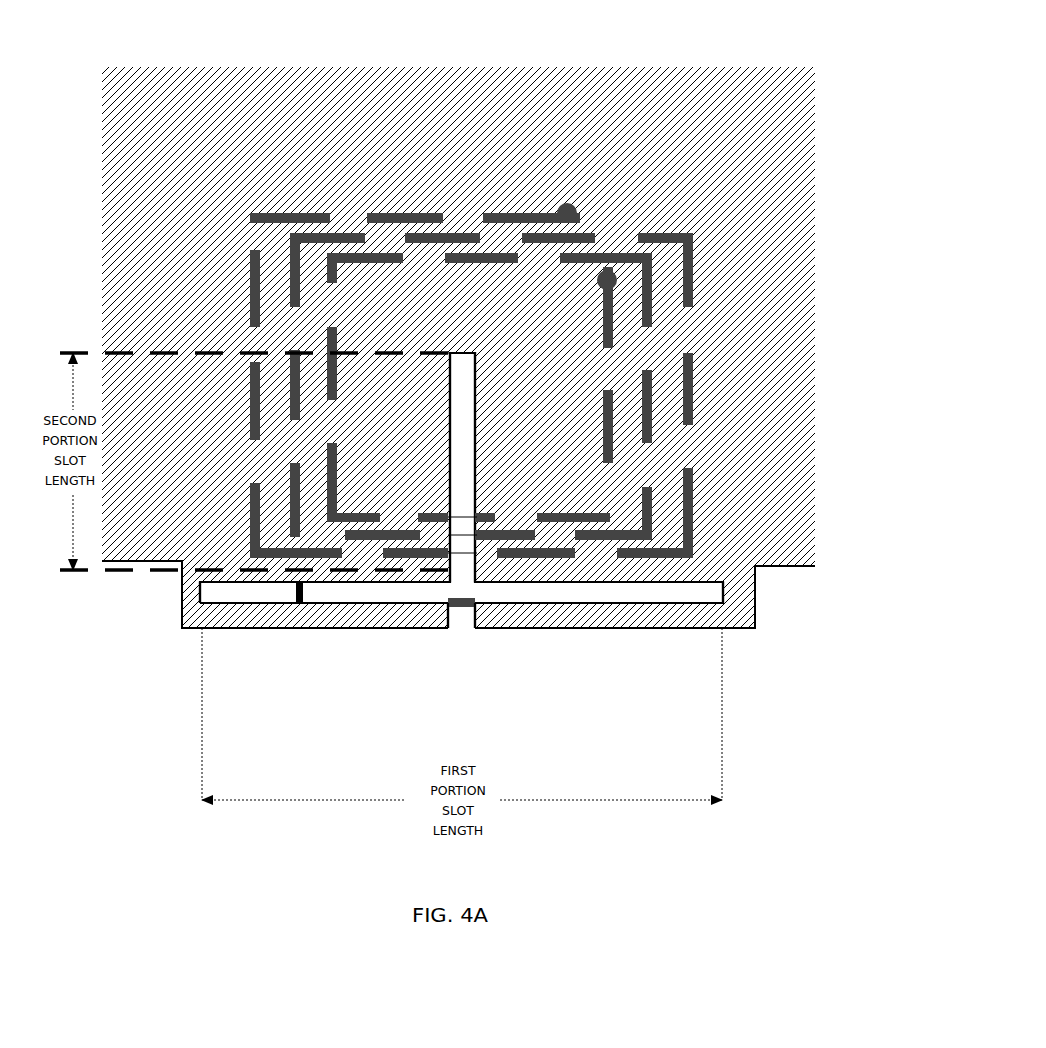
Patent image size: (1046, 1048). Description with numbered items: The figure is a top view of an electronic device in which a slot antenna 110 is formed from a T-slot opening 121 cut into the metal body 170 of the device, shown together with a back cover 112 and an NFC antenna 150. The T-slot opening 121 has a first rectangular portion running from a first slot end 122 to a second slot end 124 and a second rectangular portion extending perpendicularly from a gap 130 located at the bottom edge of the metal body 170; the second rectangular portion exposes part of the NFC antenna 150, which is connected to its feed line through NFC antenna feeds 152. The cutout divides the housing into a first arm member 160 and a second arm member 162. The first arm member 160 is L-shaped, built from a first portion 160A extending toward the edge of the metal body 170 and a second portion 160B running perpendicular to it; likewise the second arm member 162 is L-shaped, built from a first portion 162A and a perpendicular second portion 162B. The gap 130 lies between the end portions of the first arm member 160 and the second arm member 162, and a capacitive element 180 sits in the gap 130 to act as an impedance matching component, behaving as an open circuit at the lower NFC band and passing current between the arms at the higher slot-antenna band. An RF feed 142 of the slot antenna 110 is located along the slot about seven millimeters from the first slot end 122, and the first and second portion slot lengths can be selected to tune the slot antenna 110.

The slot antenna 110 is at (702, 558).
The back cover 112 is at (104, 184).
The T-slot opening 121 is at (572, 590).
The first slot end 122 is at (197, 591).
The second slot end 124 is at (728, 584).
The gap 130 is at (447, 632).
The RF feed 142 is at (299, 608).
The NFC antenna 150 is at (378, 202).
The NFC antenna feed 152 is at (581, 197).
The first arm member 160 is at (346, 622).
The first portion of first arm member 160A is at (177, 619).
The second portion of first arm member 160B is at (249, 614).
The second arm member 162 is at (558, 619).
The first portion of second arm member 162A is at (759, 607).
The second portion of second arm member 162B is at (703, 617).
The metal body 170 is at (148, 262).
The capacitive element 180 is at (480, 611).